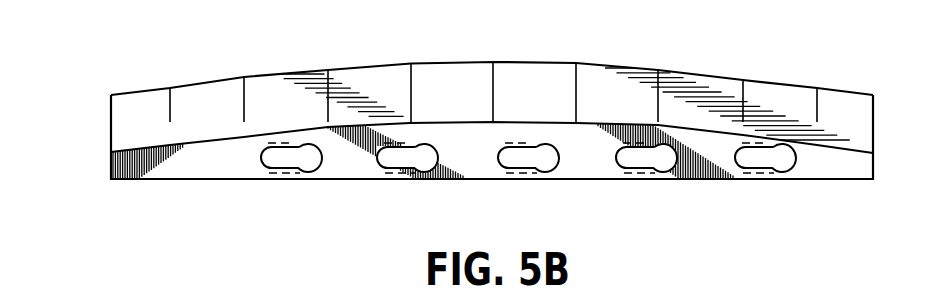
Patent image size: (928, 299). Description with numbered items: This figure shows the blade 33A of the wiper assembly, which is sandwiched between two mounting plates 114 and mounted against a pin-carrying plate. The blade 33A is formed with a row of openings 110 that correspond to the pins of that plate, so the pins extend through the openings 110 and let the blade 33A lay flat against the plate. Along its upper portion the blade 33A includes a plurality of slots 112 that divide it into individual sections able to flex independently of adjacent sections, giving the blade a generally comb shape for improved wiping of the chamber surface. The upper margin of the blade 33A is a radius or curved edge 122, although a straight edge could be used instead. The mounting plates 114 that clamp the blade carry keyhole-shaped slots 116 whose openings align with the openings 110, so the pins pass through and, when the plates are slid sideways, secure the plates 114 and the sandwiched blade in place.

The blade 33A is at (850, 98).
The curved edge 122 is at (462, 62).
The slots 112 is at (577, 74).
The mounting plates 114 is at (484, 152).
The openings 110 is at (292, 173).
The keyhole slots 116 is at (275, 172).